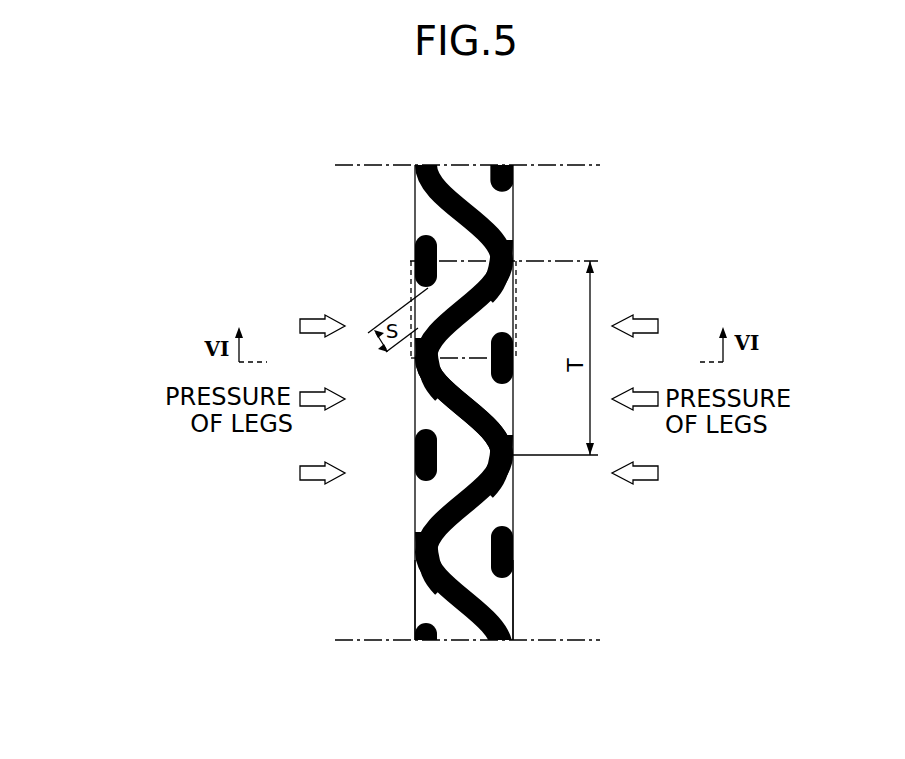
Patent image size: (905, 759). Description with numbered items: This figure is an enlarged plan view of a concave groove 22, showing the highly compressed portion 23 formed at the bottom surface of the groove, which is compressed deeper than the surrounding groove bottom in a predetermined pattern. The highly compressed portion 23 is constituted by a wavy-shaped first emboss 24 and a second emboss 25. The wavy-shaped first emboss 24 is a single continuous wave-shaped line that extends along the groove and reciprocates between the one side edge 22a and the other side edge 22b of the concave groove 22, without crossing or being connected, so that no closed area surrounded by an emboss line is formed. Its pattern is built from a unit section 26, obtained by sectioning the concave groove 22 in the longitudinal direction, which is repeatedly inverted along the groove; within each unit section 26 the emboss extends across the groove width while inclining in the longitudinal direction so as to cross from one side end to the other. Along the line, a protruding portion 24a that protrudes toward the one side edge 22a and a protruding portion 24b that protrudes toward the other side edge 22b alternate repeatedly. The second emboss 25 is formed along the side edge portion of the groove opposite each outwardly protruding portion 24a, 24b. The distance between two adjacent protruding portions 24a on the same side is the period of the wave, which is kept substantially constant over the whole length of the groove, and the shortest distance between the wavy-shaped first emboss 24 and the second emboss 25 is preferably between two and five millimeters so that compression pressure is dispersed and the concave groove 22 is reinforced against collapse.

The concave groove 22 is at (458, 630).
The one side edge 22a is at (513, 597).
The other side edge 22b is at (413, 600).
The highly compressed portion 23 is at (466, 198).
The wavy-shaped first emboss 24 is at (440, 403).
The protruding portion 24a is at (513, 260).
The protruding portion 24b is at (413, 359).
The second emboss 25 is at (415, 262).
The unit section 26 is at (410, 284).